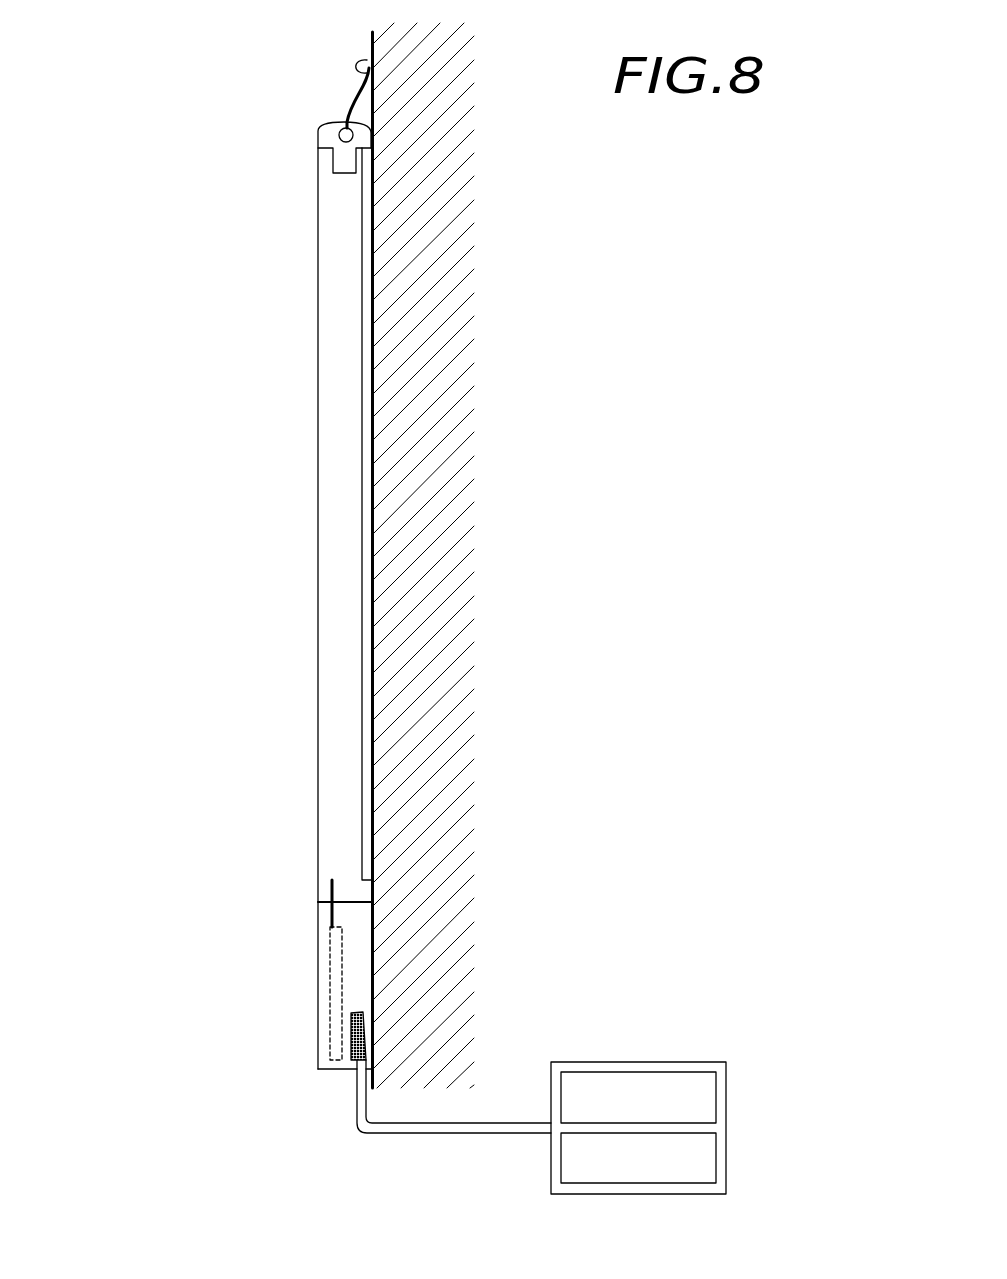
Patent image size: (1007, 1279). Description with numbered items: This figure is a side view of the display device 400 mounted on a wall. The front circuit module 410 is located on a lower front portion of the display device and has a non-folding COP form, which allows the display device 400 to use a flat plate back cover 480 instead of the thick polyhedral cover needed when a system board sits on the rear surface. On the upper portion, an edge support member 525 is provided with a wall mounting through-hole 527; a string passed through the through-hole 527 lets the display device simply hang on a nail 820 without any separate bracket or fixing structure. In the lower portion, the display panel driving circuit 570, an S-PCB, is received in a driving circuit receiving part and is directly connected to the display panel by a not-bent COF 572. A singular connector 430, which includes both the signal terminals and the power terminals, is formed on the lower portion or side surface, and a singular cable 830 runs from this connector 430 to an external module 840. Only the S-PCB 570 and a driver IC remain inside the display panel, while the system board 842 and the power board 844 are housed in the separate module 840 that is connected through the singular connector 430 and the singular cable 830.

The display device 400 is at (297, 96).
The nail 820 is at (360, 58).
The wall mounting through-hole 527 is at (338, 135).
The edge support member 525 is at (325, 143).
The flat plate back cover 480 is at (367, 255).
The COF 572 is at (331, 887).
The front circuit module 410 is at (327, 918).
The singular connector 430 is at (345, 1042).
The display panel driving circuit 570 is at (330, 1058).
The singular cable 830 is at (357, 1115).
The module 840 is at (711, 1030).
The system board 842 is at (716, 1092).
The power board 844 is at (716, 1150).